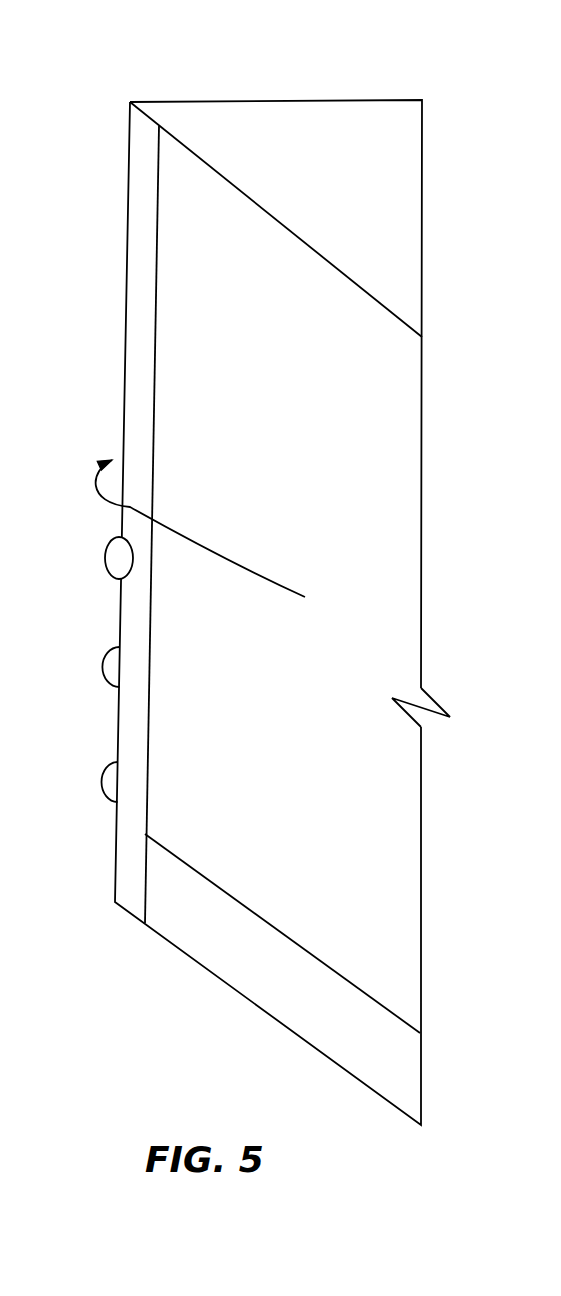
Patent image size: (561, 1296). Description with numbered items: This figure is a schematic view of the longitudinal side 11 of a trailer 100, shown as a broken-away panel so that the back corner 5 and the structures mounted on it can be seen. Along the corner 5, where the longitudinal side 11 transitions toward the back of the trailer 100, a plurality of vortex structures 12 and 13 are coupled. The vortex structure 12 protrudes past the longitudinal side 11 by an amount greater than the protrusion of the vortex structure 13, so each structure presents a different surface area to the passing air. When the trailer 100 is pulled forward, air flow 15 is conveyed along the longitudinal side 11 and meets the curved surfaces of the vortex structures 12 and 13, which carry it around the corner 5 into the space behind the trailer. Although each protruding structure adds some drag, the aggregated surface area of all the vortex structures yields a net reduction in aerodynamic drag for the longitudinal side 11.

The trailer 100 is at (496, 53).
The longitudinal side 11 is at (336, 402).
The back corner 5 is at (127, 265).
The vortex structure 12 is at (105, 566).
The vortex structure 13 is at (102, 673).
The air flow 15 is at (248, 571).